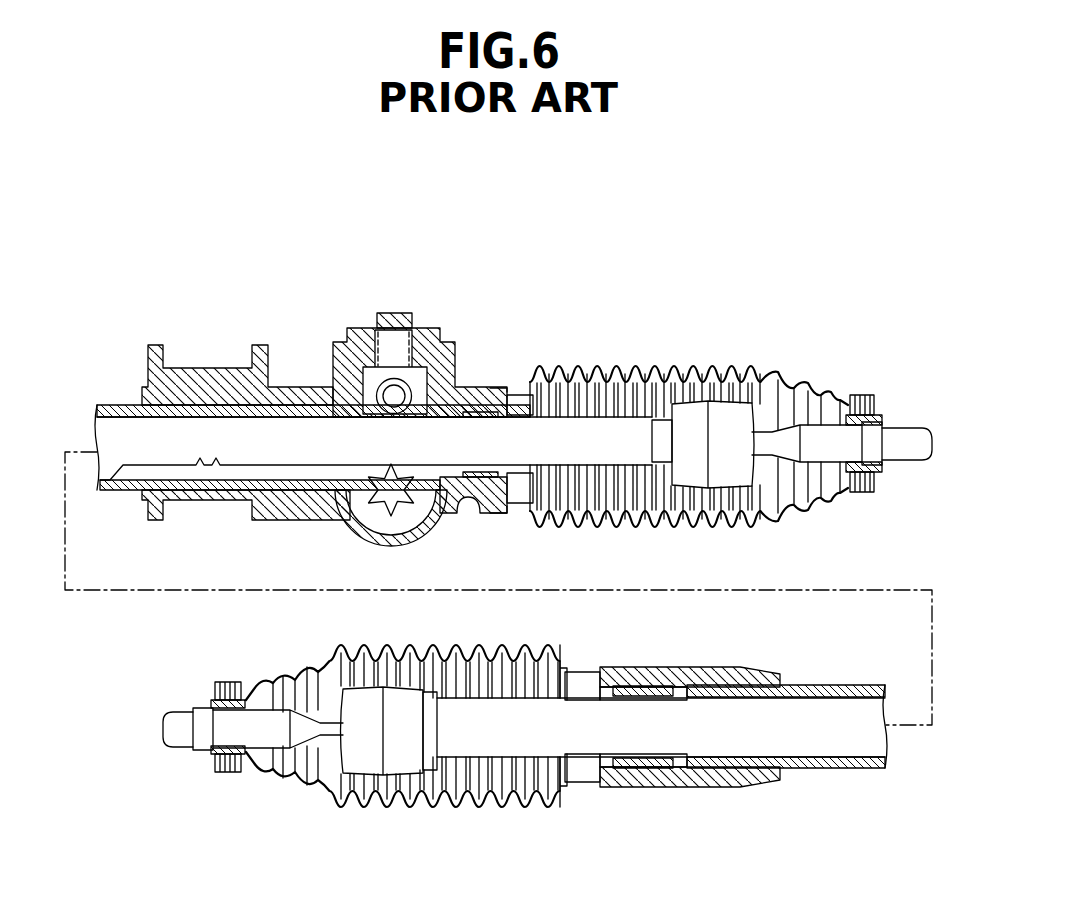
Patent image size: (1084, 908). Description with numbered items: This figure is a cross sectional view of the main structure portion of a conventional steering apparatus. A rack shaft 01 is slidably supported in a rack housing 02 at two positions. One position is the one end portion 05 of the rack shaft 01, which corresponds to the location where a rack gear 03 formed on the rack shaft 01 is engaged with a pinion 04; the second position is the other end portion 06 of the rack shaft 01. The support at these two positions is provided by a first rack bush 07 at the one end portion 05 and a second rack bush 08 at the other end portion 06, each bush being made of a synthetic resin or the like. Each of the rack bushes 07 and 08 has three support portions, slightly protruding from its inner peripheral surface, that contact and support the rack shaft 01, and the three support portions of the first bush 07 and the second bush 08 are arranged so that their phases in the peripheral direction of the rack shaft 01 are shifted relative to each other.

The rack shaft 01 is at (295, 435).
The rack housing 02 is at (212, 390).
The rack gear 03 is at (430, 500).
The pinion 04 is at (390, 491).
The one end portion 05 is at (520, 374).
The other end portion 06 is at (637, 789).
The first rack bush 07 is at (473, 410).
The second rack bush 08 is at (660, 770).